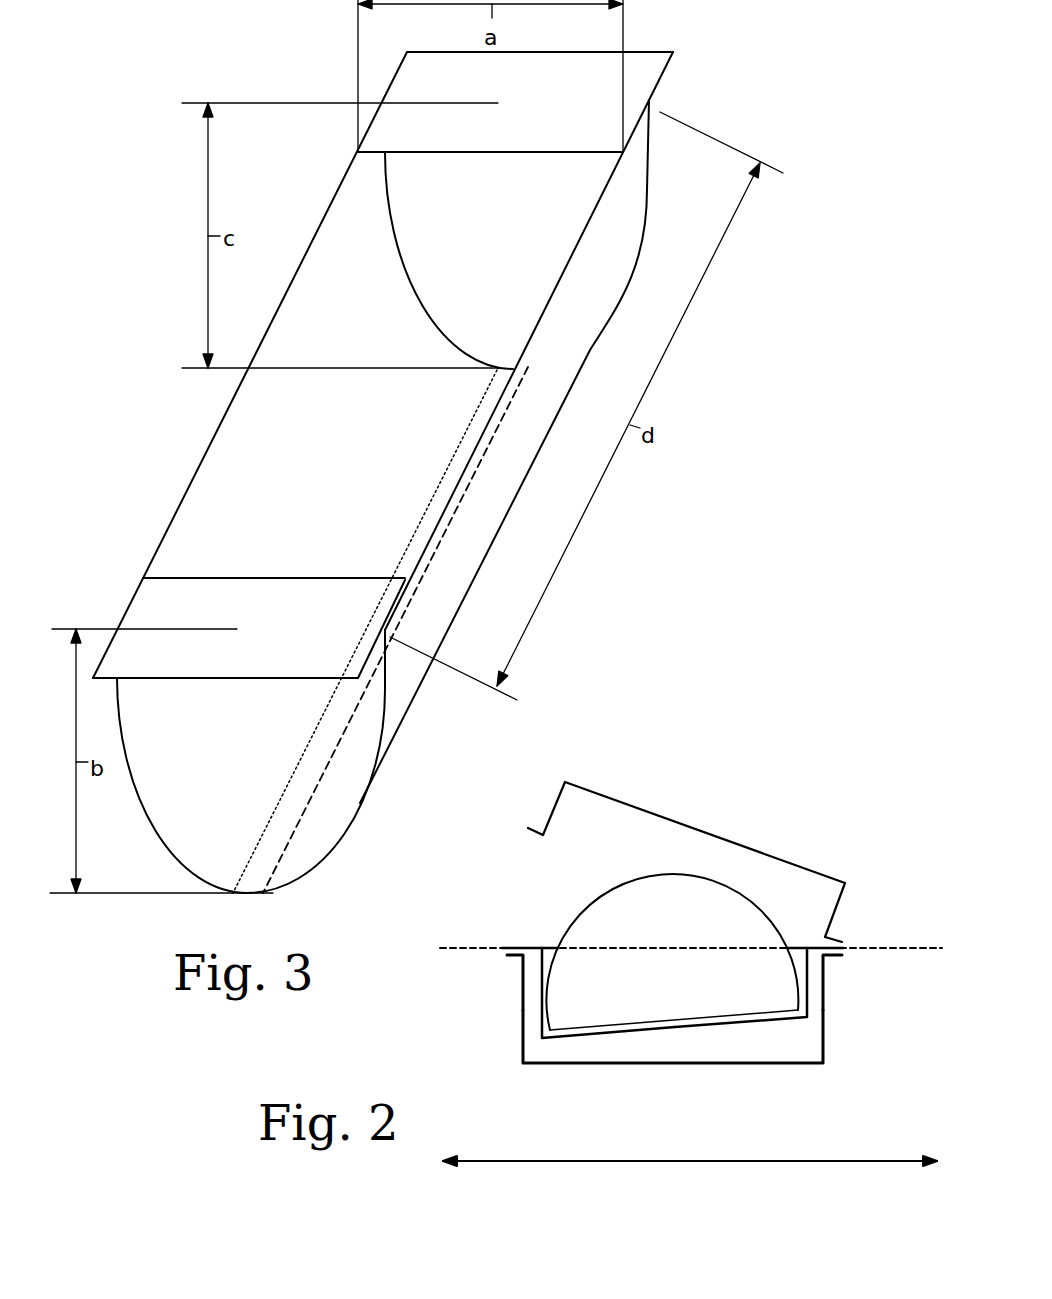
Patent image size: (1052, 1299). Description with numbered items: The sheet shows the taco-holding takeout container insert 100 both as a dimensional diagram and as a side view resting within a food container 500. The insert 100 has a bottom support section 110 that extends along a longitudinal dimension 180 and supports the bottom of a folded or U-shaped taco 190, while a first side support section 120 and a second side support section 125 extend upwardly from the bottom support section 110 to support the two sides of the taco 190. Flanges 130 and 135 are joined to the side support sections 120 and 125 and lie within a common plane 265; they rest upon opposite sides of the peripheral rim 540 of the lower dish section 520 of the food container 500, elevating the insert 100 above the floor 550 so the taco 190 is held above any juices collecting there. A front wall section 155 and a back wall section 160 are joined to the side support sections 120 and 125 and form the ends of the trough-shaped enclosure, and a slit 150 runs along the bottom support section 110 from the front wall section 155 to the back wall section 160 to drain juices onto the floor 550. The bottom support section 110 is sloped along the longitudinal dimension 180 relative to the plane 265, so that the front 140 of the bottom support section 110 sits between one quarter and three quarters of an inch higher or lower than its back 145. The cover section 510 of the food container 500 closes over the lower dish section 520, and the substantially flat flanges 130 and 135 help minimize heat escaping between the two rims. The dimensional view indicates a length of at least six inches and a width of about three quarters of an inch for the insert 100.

In FIG. 3, the taco-holding takeout container insert 100 is at (675, 532).
In FIG. 3, the bottom support section 110 is at (420, 687).
In FIG. 2, the bottom support section 110 is at (680, 1008).
In FIG. 3, the first side support section 120 is at (583, 317).
In FIG. 3, the second side support section 125 is at (240, 457).
In FIG. 2, the flange 130 is at (528, 948).
In FIG. 2, the flange 135 is at (818, 947).
In FIG. 2, the front of the bottom support section 140 is at (542, 1038).
In FIG. 2, the back of the bottom support section 145 is at (808, 1017).
In FIG. 3, the slit 150 is at (273, 835).
In FIG. 3, the front wall section 155 is at (340, 792).
In FIG. 3, the back wall section 160 is at (525, 225).
In FIG. 2, the longitudinal dimension 180 is at (875, 1160).
In FIG. 2, the taco 190 is at (663, 932).
In FIG. 2, the plane 265 is at (907, 947).
In FIG. 2, the food container 500 is at (664, 925).
In FIG. 2, the cover section 510 is at (597, 790).
In FIG. 2, the lower dish section 520 is at (825, 982).
In FIG. 2, the peripheral rim 540 is at (517, 957).
In FIG. 2, the floor 550 is at (530, 1065).